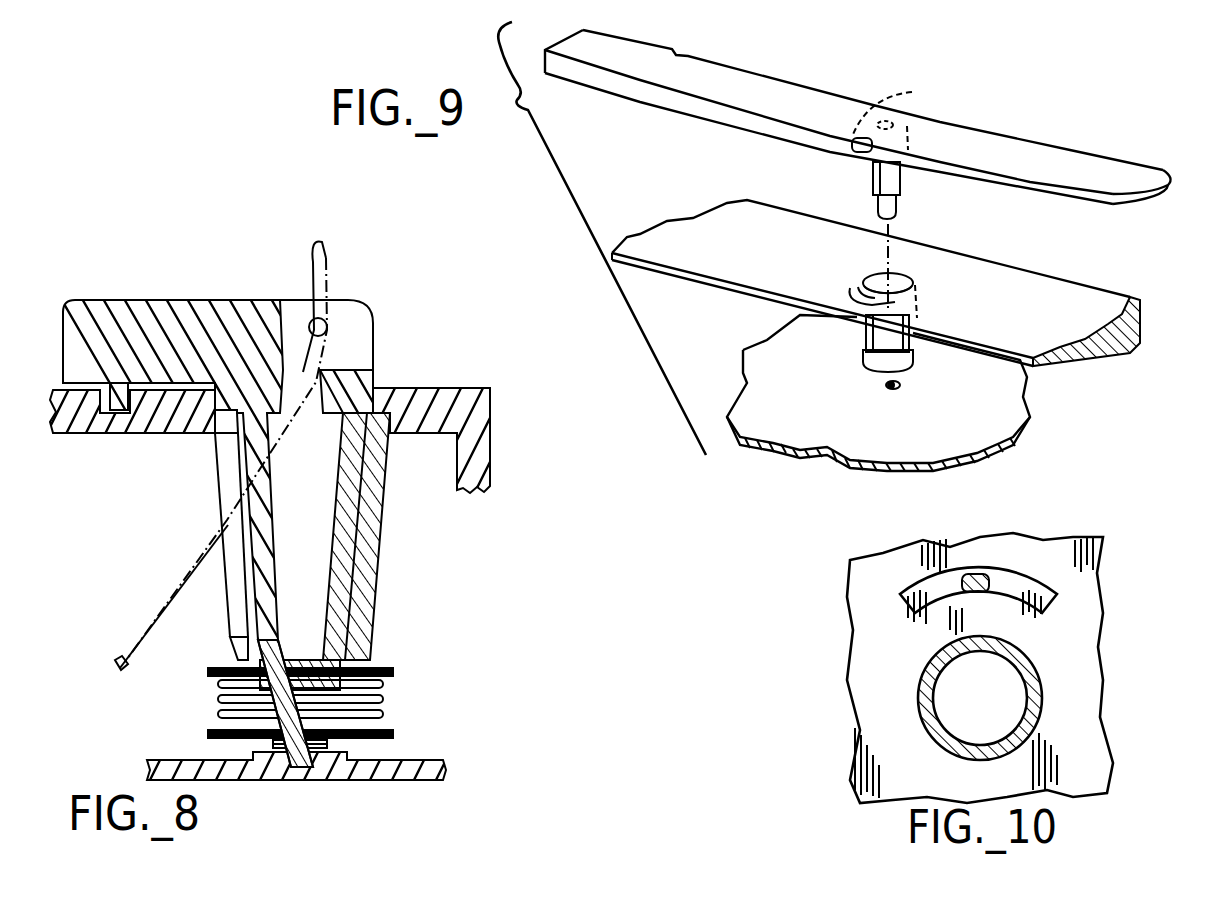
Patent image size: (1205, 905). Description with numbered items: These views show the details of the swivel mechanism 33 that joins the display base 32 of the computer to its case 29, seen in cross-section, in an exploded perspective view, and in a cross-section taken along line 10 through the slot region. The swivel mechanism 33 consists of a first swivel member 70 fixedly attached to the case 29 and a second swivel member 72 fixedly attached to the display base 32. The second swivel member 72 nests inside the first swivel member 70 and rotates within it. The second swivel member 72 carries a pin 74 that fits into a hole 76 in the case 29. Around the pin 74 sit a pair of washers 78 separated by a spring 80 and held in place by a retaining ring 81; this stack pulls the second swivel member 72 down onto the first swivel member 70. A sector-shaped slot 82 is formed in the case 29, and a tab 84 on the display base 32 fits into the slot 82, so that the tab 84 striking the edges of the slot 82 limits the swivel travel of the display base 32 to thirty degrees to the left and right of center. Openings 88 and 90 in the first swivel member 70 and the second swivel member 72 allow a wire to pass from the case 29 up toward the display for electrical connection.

In FIG. 9, the section line 10— 10 is at (860, 135).
In FIG. 8, the case 29 is at (430, 389).
In FIG. 9, the case 29 is at (1060, 297).
In FIG. 10, the case 29 is at (1103, 738).
In FIG. 8, the display base 32 is at (150, 301).
In FIG. 9, the display base 32 is at (1120, 172).
In FIG. 9, the swivel mechanism 33 is at (956, 229).
In FIG. 8, the first swivel member 70 is at (374, 564).
In FIG. 9, the first swivel member 70 is at (915, 364).
In FIG. 8, the second swivel member 72 is at (376, 622).
In FIG. 9, the second swivel member 72 is at (902, 178).
In FIG. 10, the second swivel member 72 is at (1032, 668).
In FIG. 8, the pin 74 is at (297, 773).
In FIG. 9, the pin 74 is at (898, 212).
In FIG. 8, the hole 76 is at (313, 773).
In FIG. 9, the hole 76 is at (898, 388).
In FIG. 8, the washers 78 is at (384, 664).
In FIG. 8, the spring 80 is at (382, 706).
In FIG. 8, the retaining ring 81 is at (330, 745).
In FIG. 8, the sector-shaped slot 82 is at (103, 437).
In FIG. 9, the sector-shaped slot 82 is at (857, 292).
In FIG. 10, the sector-shaped slot 82 is at (1027, 582).
In FIG. 8, the tab 84 is at (113, 418).
In FIG. 9, the tab 84 is at (899, 196).
In FIG. 10, the tab 84 is at (930, 582).
In FIG. 8, the opening 88 is at (223, 457).
In FIG. 9, the opening 88 is at (863, 343).
In FIG. 8, the opening 90 is at (227, 497).
In FIG. 9, the opening 90 is at (875, 168).